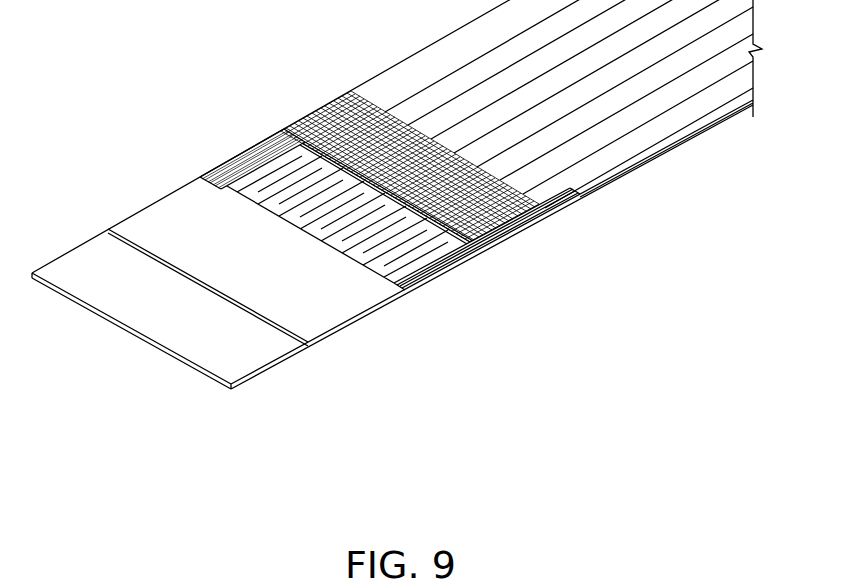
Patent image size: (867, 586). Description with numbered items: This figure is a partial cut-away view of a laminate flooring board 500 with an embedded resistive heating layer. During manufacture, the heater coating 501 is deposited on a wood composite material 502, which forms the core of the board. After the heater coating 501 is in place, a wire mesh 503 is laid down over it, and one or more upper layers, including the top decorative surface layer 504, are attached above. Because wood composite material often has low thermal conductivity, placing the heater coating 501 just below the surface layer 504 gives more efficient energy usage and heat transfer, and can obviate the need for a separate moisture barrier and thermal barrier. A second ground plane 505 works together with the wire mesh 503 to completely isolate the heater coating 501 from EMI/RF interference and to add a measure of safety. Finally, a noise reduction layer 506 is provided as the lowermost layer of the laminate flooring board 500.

The laminate flooring board 500 is at (265, 27).
The heater coating 501 is at (430, 263).
The wood composite material 502 is at (225, 185).
The wire mesh 503 is at (517, 222).
The top decorative surface layer 504 is at (603, 163).
The second ground plane 505 is at (343, 310).
The noise reduction layer 506 is at (267, 360).